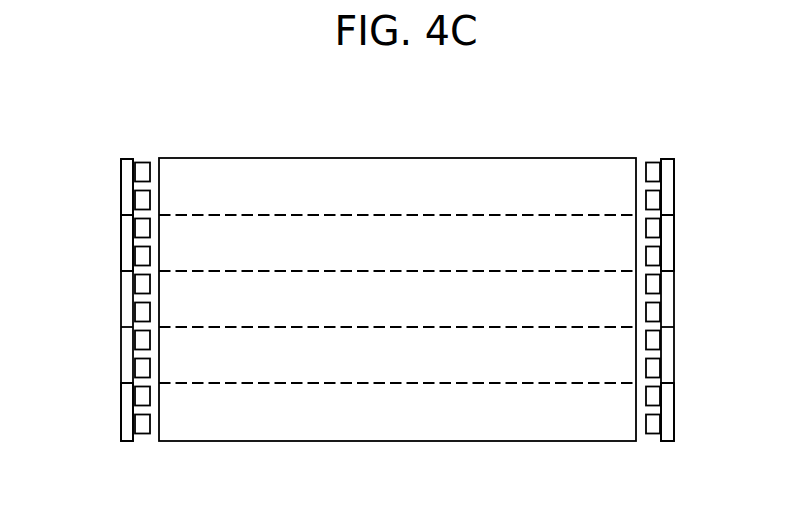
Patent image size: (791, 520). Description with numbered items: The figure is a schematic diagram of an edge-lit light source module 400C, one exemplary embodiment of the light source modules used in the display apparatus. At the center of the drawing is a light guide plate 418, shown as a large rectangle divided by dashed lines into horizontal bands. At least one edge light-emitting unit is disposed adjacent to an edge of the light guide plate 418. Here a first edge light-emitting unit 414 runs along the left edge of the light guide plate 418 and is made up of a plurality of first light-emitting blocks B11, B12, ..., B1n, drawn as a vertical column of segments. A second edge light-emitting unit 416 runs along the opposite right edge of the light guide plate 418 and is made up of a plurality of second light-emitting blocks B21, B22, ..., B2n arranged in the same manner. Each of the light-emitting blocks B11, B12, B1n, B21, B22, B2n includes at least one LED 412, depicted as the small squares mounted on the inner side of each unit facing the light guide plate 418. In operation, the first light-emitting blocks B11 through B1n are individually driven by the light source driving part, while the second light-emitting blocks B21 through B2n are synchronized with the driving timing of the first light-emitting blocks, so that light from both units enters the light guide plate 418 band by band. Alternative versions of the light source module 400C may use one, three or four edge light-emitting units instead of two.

The light source module 400C is at (420, 110).
The LED 412 is at (143, 161).
The first edge light-emitting unit 414 is at (127, 441).
The second edge light-emitting unit 416 is at (667, 442).
The light guide plate 418 is at (398, 441).
The first light-emitting block B11 is at (121, 183).
The first light-emitting block B12 is at (121, 240).
The first light-emitting block B1n is at (121, 410).
The second light-emitting block B21 is at (674, 183).
The second light-emitting block B22 is at (674, 240).
The second light-emitting block B2n is at (674, 412).